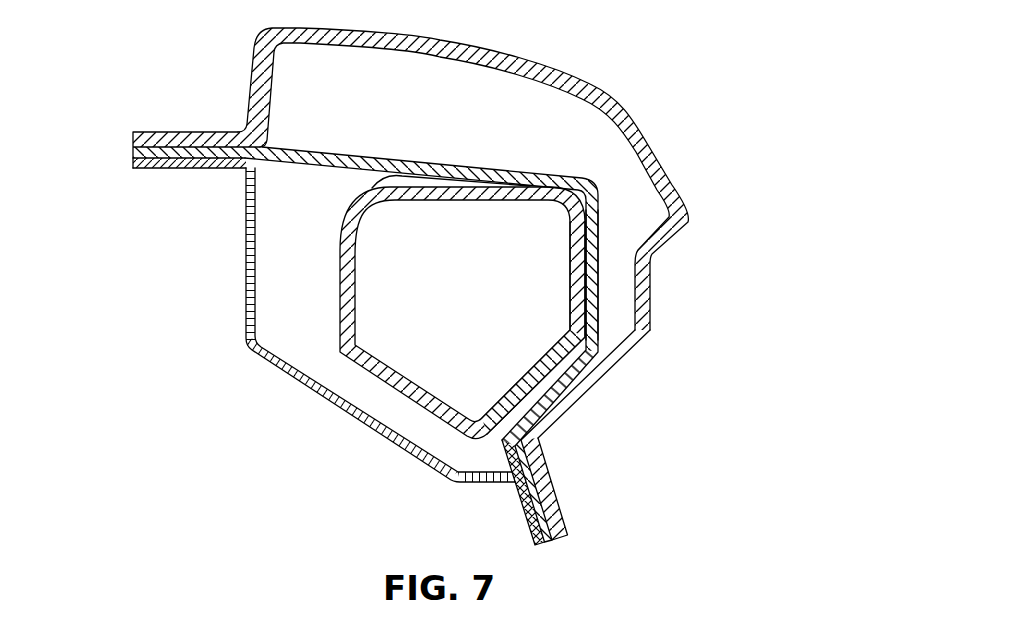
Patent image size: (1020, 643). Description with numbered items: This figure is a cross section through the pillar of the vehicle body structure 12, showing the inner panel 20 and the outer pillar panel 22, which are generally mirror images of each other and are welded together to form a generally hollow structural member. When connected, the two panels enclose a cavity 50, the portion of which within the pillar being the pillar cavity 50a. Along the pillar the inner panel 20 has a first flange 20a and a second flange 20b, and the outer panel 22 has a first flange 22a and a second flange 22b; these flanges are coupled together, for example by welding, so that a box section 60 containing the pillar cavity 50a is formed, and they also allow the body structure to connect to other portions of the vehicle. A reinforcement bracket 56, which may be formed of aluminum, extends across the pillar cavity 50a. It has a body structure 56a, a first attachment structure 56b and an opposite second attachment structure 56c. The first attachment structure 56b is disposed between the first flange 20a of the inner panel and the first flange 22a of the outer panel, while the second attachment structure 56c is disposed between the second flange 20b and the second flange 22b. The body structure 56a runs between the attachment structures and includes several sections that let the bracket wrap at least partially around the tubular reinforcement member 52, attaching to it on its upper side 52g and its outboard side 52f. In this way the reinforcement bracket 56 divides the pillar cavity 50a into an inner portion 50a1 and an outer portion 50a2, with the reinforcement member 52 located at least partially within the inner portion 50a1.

The vehicle body structure 12 is at (697, 140).
The inner panel 20 is at (260, 353).
The first flange of the inner panel 20a is at (180, 170).
The second flange of the inner panel 20b is at (518, 515).
The outer pillar panel 22 is at (622, 117).
The first flange of the outer panel 22a is at (183, 131).
The second flange of the outer panel 22b is at (554, 500).
The cavity 50 is at (483, 110).
The pillar cavity 50a is at (416, 95).
The inner portion of the pillar cavity 50a1 is at (282, 295).
The outer portion of the pillar cavity 50a2 is at (535, 108).
The reinforcement member 52 is at (362, 375).
The outboard side of the reinforcement member 52f is at (588, 297).
The upper side of the reinforcement member 52g is at (385, 187).
The reinforcement bracket 56 is at (296, 151).
The body structure of the reinforcement bracket 56a is at (498, 170).
The first attachment structure 56b is at (133, 152).
The second attachment structure 56c is at (543, 543).
The box section 60 is at (627, 357).